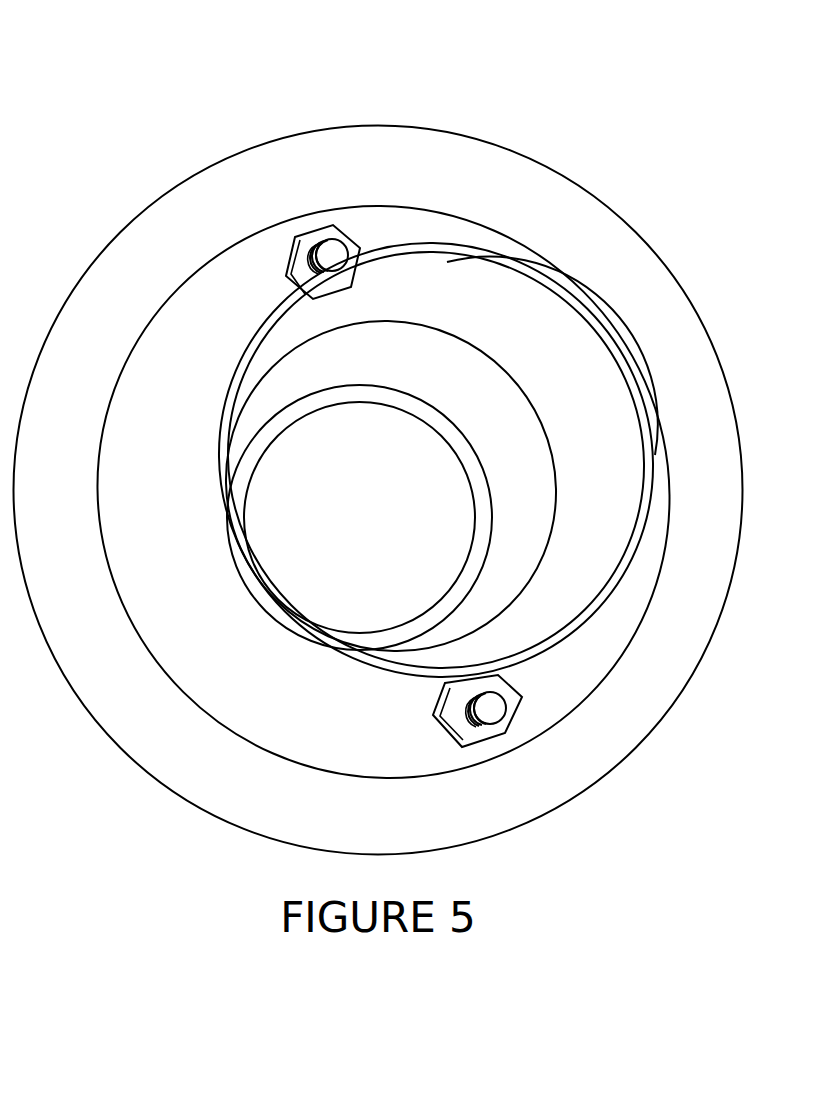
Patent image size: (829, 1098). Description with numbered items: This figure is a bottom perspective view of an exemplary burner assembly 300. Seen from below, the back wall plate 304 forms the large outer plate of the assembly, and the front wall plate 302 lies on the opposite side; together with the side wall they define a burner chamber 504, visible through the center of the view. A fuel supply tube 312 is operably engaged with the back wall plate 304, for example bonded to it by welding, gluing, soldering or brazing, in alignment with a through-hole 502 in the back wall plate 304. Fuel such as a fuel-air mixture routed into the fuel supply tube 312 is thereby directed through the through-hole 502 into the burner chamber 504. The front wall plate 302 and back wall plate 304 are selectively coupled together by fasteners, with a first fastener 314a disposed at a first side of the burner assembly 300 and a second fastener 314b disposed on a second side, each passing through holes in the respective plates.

The burner assembly 300 is at (685, 54).
The front wall plate 302 is at (381, 352).
The back wall plate 304 is at (673, 342).
The fuel supply tube 312 is at (527, 268).
The first fastener 314a is at (497, 710).
The second fastener 314b is at (333, 232).
The through-hole 502 is at (598, 464).
The burner chamber 504 is at (396, 459).